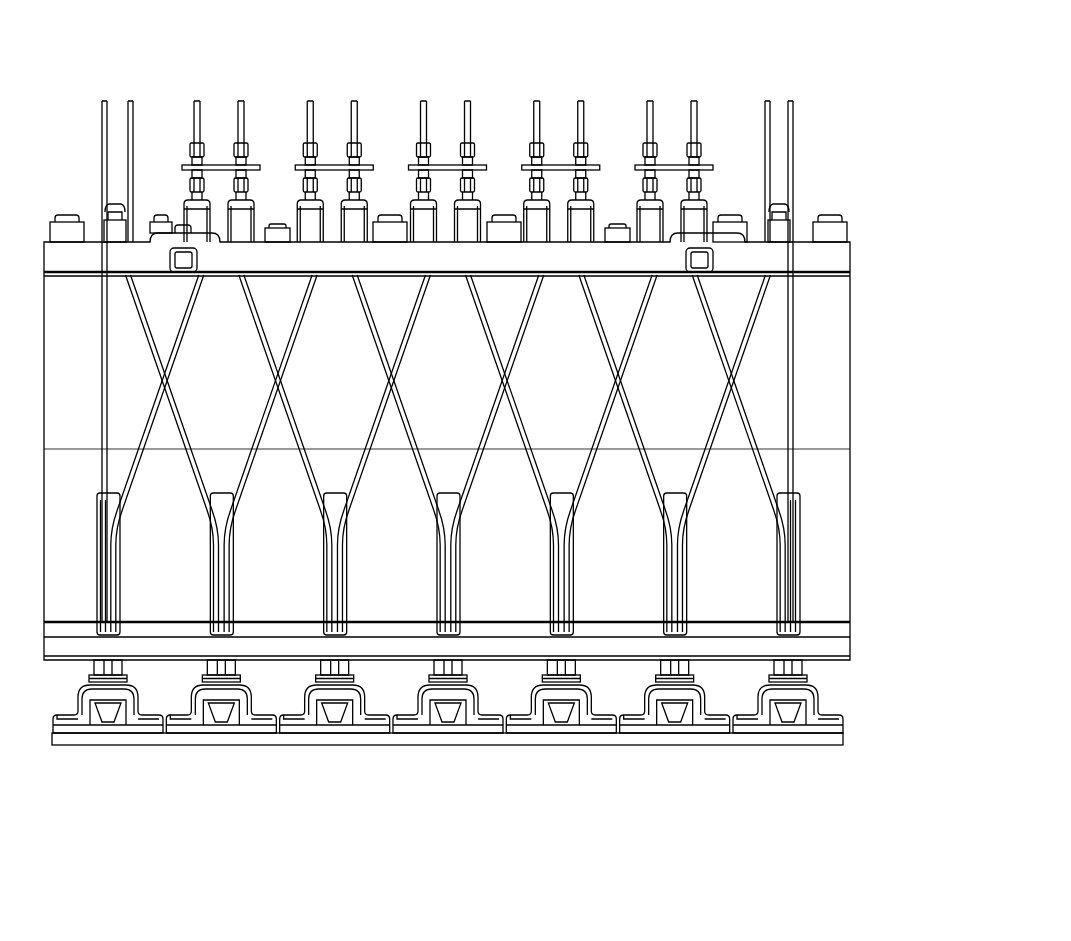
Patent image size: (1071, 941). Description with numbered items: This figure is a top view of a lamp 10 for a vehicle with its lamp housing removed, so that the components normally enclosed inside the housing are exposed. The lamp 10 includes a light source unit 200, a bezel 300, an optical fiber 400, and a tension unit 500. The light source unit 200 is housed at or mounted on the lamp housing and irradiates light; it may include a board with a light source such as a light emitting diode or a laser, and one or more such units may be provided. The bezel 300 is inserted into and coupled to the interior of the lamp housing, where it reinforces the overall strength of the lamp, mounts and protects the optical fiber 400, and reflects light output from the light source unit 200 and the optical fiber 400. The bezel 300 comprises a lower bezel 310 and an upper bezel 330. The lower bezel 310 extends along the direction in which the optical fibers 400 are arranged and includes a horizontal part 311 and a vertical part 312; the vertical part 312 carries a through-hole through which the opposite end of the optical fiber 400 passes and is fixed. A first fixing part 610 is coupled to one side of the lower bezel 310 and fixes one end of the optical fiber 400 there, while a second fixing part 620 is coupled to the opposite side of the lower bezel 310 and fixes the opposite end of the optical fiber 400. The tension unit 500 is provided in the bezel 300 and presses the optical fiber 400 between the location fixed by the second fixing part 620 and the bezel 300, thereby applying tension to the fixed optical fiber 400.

The lamp 10 is at (127, 28).
The light source unit 200 is at (790, 715).
The bezel 300 is at (938, 260).
The lower bezel 310 is at (914, 256).
The horizontal part 311 is at (838, 358).
The vertical part 312 is at (835, 257).
The upper bezel 330 is at (785, 258).
The optical fiber 400 is at (745, 408).
The tension unit 500 is at (720, 196).
The first fixing part 610 is at (848, 648).
The second fixing part 620 is at (718, 145).